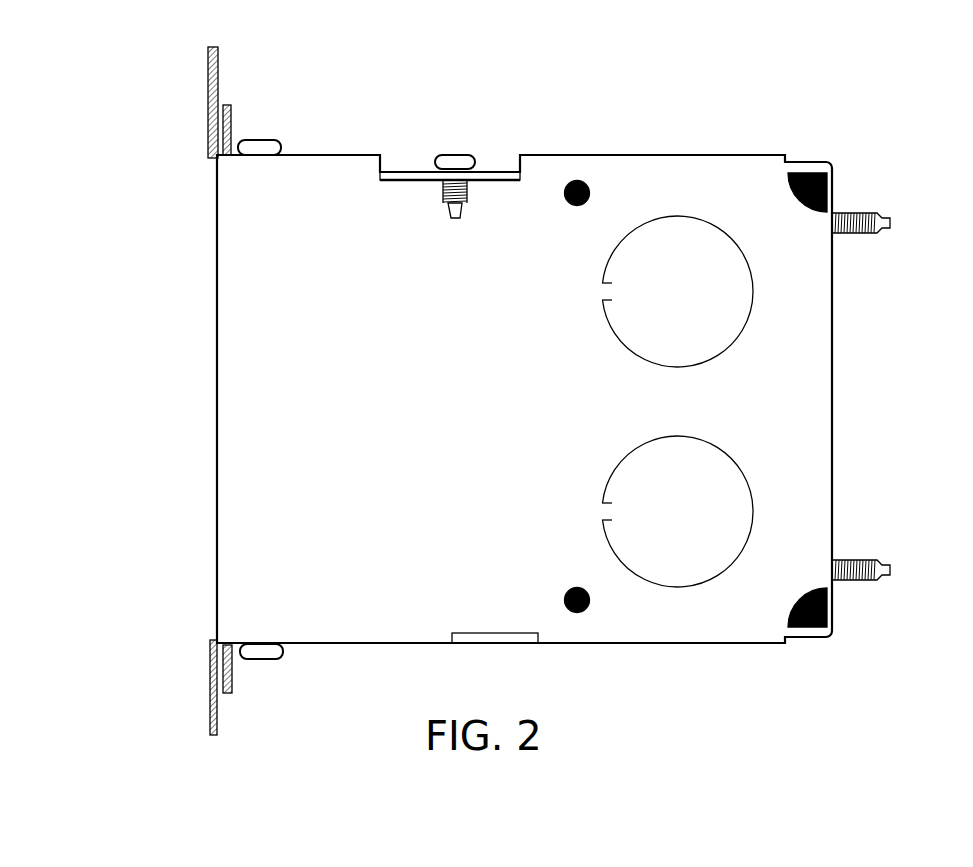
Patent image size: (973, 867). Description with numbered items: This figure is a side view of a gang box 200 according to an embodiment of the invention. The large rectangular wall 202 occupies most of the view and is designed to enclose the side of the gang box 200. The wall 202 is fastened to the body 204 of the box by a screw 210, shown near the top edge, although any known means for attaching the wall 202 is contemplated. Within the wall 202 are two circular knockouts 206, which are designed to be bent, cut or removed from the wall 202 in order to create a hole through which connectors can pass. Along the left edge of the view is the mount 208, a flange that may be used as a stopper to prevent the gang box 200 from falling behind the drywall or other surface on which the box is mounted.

The gang box 200 is at (543, 388).
The wall 202 is at (253, 305).
The body 204 is at (815, 168).
The knockouts 206 is at (692, 290).
The mount 208 is at (222, 52).
The screw 210 is at (460, 153).